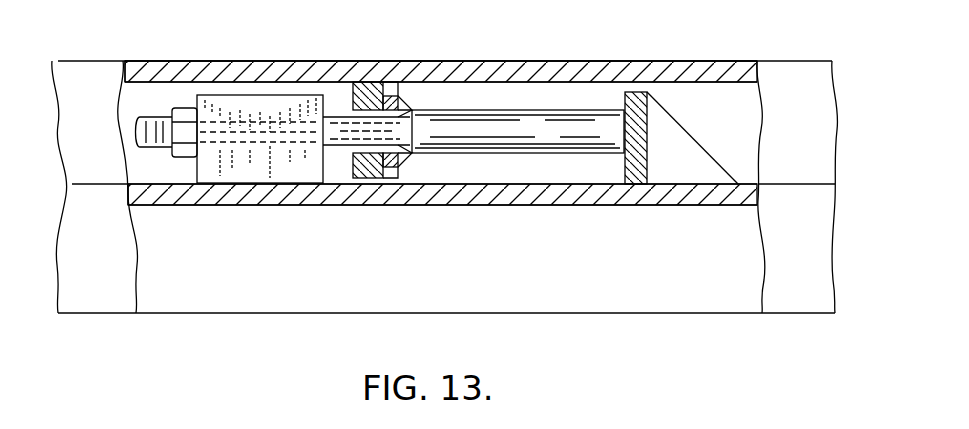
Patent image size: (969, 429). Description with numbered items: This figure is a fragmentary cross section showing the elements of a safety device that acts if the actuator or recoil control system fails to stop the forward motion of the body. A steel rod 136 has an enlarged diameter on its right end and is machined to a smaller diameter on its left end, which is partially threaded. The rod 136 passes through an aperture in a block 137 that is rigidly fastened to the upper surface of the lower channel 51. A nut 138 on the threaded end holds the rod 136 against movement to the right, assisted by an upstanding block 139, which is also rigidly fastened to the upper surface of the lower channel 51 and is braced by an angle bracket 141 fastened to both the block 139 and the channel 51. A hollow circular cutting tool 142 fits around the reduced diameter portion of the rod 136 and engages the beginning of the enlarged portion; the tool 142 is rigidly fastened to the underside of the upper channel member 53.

The lower channel 51 is at (838, 215).
The upper channel member 53 is at (800, 61).
The steel rod 136 is at (509, 110).
The block 137 is at (197, 178).
The nut 138 is at (174, 109).
The upstanding block 139 is at (647, 166).
The angle bracket 141 is at (684, 132).
The hollow circular cutting tool 142 is at (374, 88).